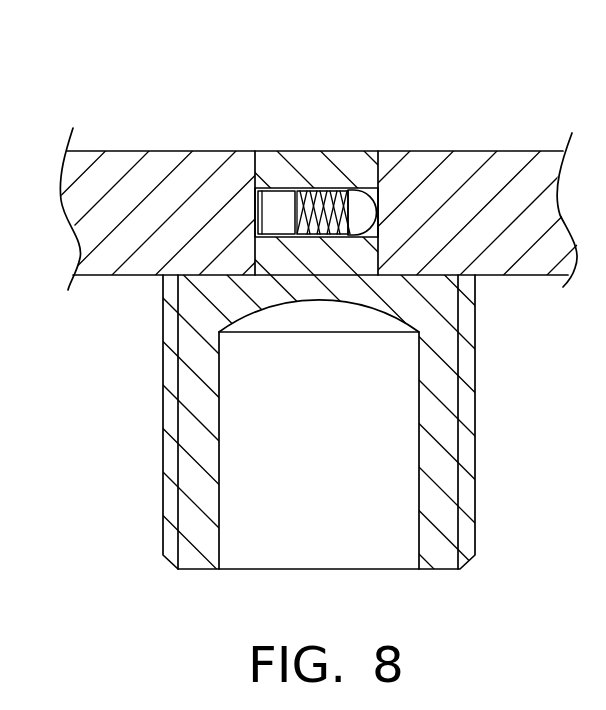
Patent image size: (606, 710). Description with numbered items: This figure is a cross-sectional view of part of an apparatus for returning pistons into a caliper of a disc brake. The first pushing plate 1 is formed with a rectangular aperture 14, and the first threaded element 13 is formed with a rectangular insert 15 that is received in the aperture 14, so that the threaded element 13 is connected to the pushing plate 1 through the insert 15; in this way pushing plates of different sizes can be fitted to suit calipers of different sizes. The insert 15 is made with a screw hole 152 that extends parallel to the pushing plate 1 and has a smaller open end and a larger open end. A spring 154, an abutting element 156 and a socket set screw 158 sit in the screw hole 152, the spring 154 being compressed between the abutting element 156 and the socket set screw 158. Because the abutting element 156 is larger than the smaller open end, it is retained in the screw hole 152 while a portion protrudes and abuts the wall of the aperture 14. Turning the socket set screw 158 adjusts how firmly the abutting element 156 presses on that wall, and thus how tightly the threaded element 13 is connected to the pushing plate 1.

The first pushing plate 1 is at (509, 151).
The first threaded element 13 is at (163, 405).
The rectangular aperture 14 is at (215, 151).
The rectangular insert 15 is at (359, 166).
The screw hole 152 is at (350, 237).
The spring 154 is at (316, 188).
The abutting element 156 is at (368, 206).
The socket set screw 158 is at (275, 198).